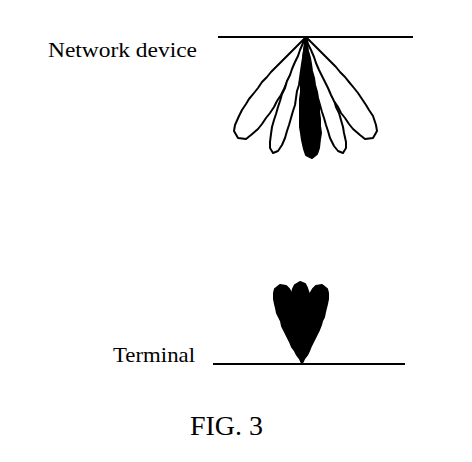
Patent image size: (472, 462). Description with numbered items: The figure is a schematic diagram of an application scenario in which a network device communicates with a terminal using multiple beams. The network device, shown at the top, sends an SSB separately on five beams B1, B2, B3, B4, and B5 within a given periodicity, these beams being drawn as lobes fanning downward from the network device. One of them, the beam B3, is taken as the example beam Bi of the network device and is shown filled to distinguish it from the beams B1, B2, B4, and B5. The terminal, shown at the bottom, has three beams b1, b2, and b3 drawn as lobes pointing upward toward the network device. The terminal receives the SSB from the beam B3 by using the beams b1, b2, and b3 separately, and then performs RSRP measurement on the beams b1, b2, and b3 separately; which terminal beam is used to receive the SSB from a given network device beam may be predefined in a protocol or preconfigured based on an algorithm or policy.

The beam B1 is at (258, 103).
The beam B2 is at (283, 115).
The beam B3 is at (312, 115).
The beam B4 is at (336, 113).
The beam B5 is at (352, 105).
The beam b1 is at (277, 310).
The beam b2 is at (302, 308).
The beam b3 is at (327, 310).